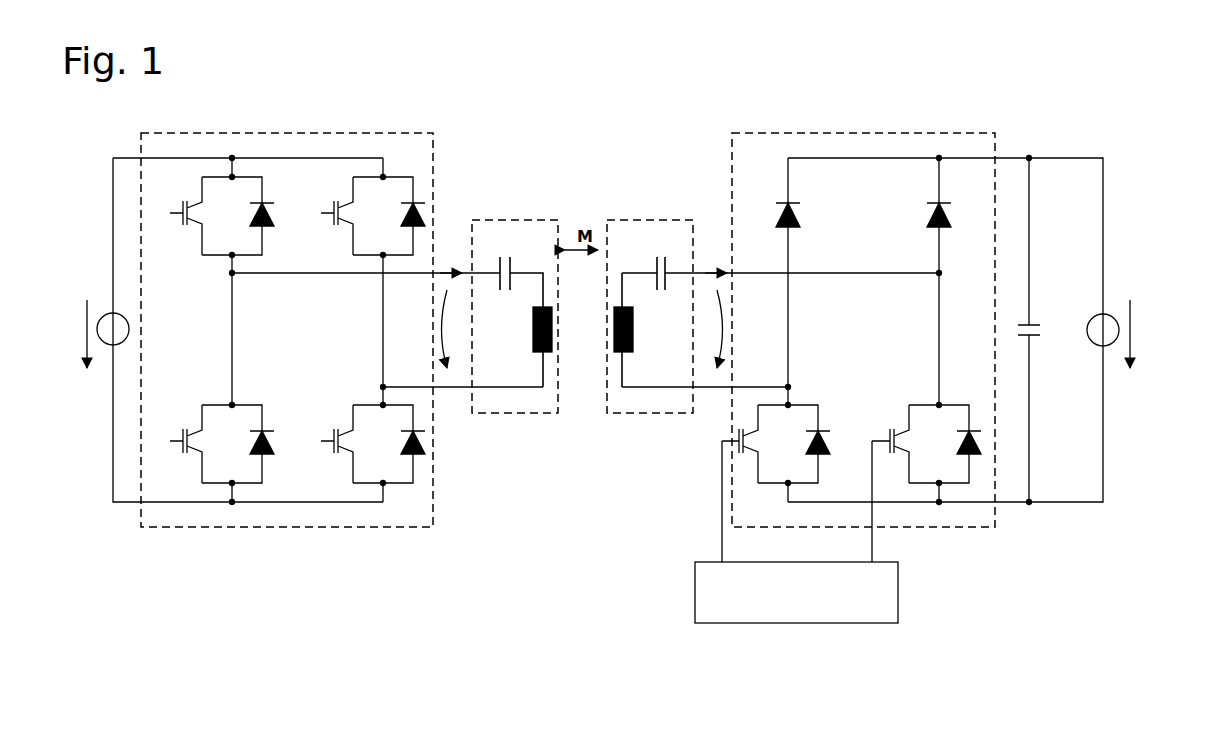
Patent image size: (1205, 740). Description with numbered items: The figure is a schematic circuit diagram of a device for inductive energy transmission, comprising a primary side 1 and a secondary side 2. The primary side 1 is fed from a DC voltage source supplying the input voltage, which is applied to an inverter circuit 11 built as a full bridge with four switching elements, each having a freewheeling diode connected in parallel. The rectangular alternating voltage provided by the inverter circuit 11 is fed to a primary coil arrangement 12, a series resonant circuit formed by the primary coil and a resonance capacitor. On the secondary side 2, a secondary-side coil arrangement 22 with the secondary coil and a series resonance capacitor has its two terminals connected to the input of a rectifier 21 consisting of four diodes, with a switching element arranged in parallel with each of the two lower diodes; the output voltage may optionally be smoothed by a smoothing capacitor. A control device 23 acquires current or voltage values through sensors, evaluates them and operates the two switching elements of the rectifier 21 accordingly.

The primary side 1 is at (113, 628).
The secondary side 2 is at (622, 628).
The inverter circuit 11 is at (289, 133).
The primary coil arrangement 12 is at (515, 220).
The rectifier 21 is at (864, 133).
The secondary-side coil arrangement 22 is at (651, 220).
The control device 23 is at (898, 590).